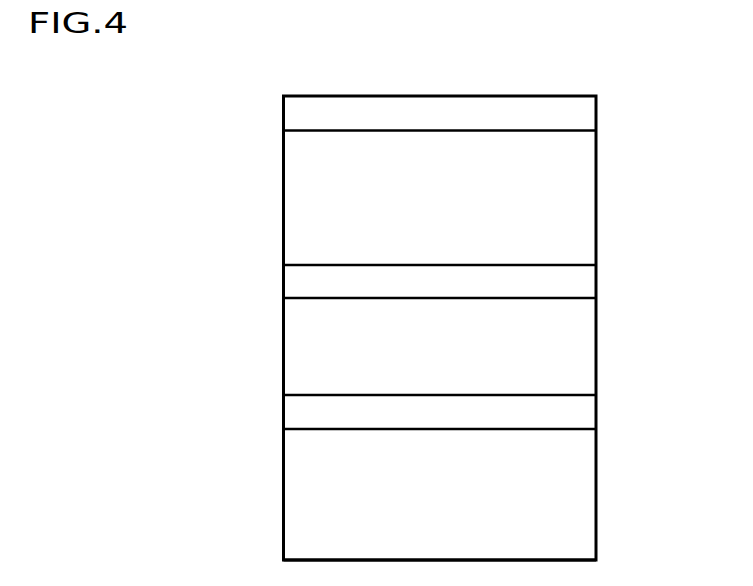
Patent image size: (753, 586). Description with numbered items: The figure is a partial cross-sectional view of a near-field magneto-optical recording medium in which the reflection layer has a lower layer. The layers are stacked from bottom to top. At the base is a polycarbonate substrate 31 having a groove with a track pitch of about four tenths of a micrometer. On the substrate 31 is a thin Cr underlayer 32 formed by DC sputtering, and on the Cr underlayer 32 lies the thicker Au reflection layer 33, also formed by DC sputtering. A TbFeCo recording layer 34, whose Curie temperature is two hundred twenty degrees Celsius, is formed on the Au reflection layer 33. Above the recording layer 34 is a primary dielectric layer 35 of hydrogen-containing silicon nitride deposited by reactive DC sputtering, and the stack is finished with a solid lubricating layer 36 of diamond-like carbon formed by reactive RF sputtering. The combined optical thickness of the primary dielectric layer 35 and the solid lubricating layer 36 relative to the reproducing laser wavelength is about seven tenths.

The polycarbonate substrate 31 is at (596, 479).
The Cr underlayer 32 is at (596, 412).
The Au reflection layer 33 is at (596, 347).
The recording layer 34 is at (596, 281).
The primary dielectric layer 35 is at (596, 182).
The solid lubricating layer 36 is at (596, 114).